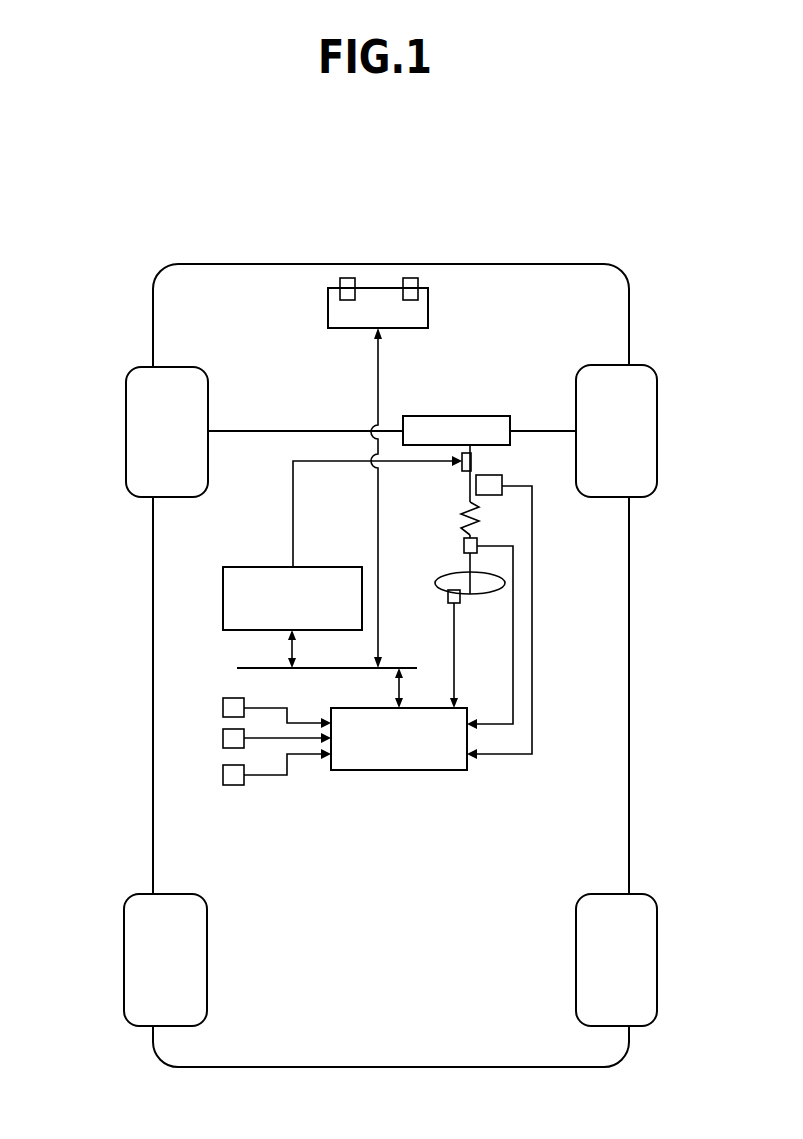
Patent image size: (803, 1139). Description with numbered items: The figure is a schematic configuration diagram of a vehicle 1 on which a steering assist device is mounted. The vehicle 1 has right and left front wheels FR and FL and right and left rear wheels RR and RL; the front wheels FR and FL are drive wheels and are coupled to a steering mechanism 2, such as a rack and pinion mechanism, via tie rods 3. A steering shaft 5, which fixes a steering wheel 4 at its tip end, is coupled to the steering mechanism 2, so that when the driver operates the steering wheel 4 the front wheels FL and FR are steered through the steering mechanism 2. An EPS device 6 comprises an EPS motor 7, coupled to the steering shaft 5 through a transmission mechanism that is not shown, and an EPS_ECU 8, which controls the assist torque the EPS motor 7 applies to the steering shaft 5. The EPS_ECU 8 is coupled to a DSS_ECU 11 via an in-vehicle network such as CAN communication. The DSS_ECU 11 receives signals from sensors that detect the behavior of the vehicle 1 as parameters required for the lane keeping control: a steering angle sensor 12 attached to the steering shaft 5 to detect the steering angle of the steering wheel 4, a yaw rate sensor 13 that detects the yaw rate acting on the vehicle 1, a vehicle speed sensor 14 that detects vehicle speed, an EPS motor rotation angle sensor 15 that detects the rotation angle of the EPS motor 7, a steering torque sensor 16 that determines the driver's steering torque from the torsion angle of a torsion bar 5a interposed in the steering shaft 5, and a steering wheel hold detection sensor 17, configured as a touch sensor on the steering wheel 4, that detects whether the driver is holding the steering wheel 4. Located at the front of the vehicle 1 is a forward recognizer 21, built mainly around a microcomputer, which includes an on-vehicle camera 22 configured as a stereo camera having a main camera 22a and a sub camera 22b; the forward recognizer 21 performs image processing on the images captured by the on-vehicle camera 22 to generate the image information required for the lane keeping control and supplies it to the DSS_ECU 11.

The vehicle 1 is at (549, 237).
The steering mechanism 2 is at (457, 416).
The tie rods 3 is at (272, 430).
The steering wheel 4 is at (472, 595).
The steering shaft 5 is at (470, 500).
The torsion bar 5a is at (462, 518).
The EPS device 6 is at (261, 507).
The EPS motor 7 is at (458, 467).
The EPS_ECU 8 is at (260, 566).
The DSS_ECU 11 is at (397, 772).
The steering angle sensor 12 is at (493, 475).
The yaw rate sensor 13 is at (223, 708).
The vehicle speed sensor 14 is at (223, 739).
The EPS motor rotation angle sensor 15 is at (223, 775).
The steering torque sensor 16 is at (464, 546).
The steering wheel hold detection sensor 17 is at (448, 597).
The forward recognizer 21 is at (328, 312).
The on-vehicle camera 22 is at (435, 214).
The main camera 22a is at (410, 277).
The sub camera 22b is at (347, 277).
The left front wheel FL is at (126, 421).
The right front wheel FR is at (657, 432).
The left rear wheel RL is at (124, 947).
The right rear wheel RR is at (657, 960).